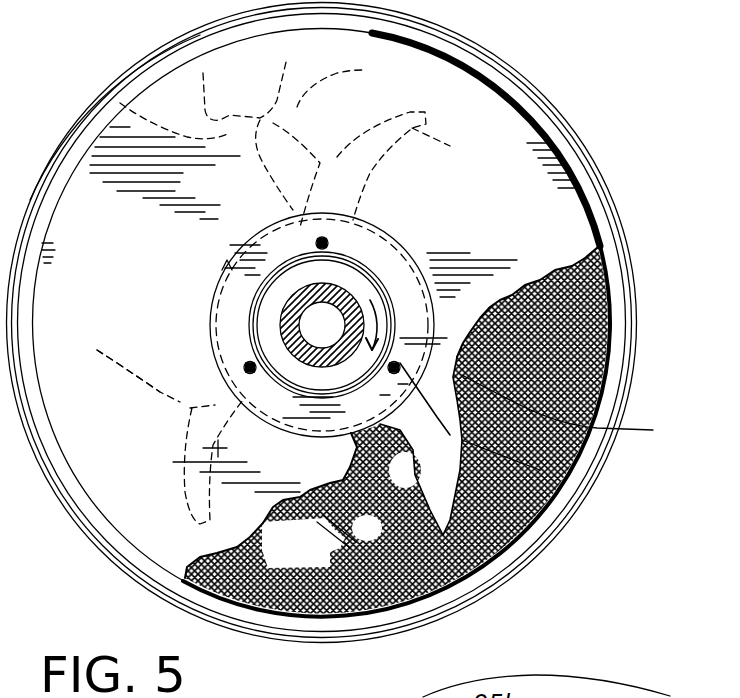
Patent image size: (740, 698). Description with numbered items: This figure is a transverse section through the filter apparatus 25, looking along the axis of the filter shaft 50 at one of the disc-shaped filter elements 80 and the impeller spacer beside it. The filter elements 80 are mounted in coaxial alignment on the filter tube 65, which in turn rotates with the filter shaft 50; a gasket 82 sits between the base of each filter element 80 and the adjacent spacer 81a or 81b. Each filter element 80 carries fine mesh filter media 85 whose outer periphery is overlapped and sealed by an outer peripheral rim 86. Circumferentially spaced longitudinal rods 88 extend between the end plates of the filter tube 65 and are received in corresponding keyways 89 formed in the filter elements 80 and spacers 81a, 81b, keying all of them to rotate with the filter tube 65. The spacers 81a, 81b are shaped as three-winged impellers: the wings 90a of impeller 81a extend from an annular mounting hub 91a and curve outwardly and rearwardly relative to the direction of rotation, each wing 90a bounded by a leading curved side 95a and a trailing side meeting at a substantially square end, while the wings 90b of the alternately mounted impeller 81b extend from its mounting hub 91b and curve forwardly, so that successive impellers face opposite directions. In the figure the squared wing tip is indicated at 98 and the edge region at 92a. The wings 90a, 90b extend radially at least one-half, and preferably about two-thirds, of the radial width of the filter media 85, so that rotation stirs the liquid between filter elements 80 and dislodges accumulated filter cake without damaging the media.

The filter apparatus 25 is at (560, 97).
The filter shaft 50 is at (408, 257).
The filter tube 65 is at (362, 293).
The filter element 80 is at (538, 520).
The spacer 81a is at (635, 303).
The spacer 81b is at (540, 470).
The gasket 82 is at (247, 233).
The filter media 85 is at (318, 565).
The outer peripheral rim 86 is at (543, 550).
The rod 88 is at (322, 240).
The keyway 89 is at (365, 174).
The wing 90a is at (180, 40).
The wing 90b is at (155, 396).
The mounting hub 91a is at (161, 308).
The mounting hub 91b is at (227, 262).
The disc edge 92a is at (140, 106).
The leading side 95a is at (352, 72).
The vane 98 is at (667, 697).